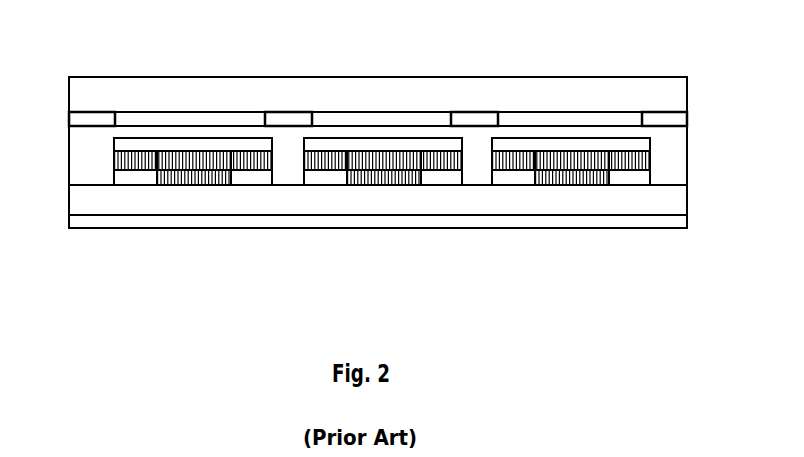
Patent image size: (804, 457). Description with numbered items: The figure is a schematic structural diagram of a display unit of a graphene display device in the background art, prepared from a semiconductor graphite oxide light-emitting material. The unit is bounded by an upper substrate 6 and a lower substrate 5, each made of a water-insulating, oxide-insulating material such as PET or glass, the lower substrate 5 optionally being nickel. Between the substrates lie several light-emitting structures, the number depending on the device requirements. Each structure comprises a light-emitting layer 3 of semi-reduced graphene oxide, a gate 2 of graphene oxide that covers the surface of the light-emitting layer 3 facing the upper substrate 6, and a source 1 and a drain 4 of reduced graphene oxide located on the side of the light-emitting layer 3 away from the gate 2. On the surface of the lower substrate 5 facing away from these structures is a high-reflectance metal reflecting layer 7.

The source 1 is at (127, 178).
The gate 2 is at (143, 143).
The light-emitting layer 3 is at (188, 165).
The drain 4 is at (257, 177).
The lower substrate 5 is at (178, 198).
The upper substrate 6 is at (345, 92).
The reflecting layer 7 is at (438, 221).